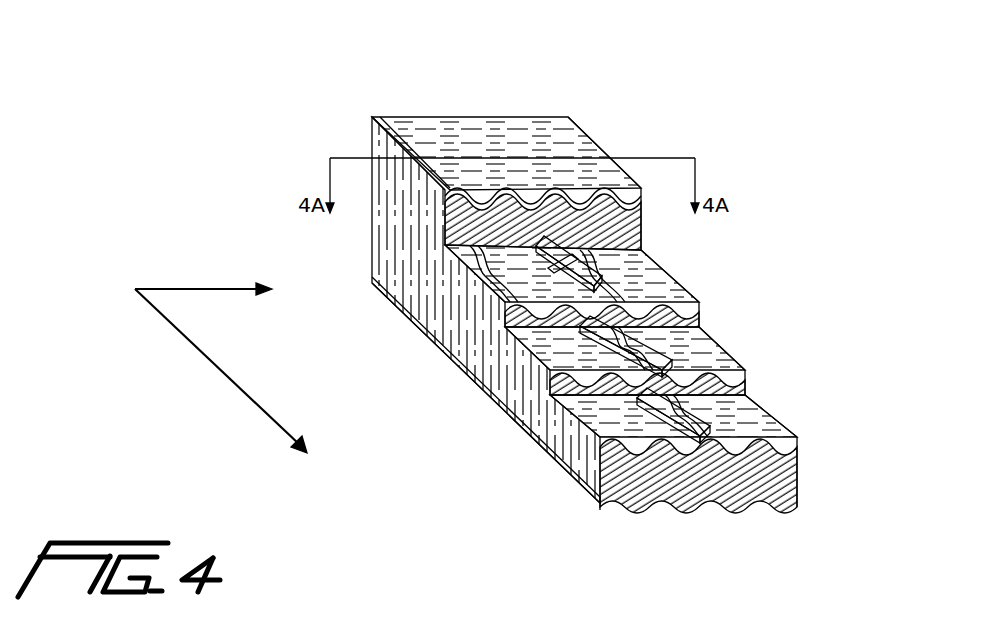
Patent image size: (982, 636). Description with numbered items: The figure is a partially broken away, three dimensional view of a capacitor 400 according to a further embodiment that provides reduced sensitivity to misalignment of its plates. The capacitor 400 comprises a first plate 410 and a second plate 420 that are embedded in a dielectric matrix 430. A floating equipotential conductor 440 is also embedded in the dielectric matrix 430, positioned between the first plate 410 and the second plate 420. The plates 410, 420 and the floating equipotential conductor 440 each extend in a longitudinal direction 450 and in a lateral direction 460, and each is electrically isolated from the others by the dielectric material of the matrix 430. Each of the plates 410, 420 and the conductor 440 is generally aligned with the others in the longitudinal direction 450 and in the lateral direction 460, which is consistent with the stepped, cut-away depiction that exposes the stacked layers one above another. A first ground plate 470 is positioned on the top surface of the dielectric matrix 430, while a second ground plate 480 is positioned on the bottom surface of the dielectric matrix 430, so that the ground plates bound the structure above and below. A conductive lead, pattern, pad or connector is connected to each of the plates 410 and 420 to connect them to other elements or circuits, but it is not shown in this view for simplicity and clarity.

The capacitor 400 is at (603, 54).
The first plate 410 is at (569, 252).
The second plate 420 is at (683, 404).
The dielectric matrix 430 is at (427, 269).
The floating equipotential conductor 440 is at (664, 340).
The longitudinal direction 450 is at (238, 383).
The lateral direction 460 is at (224, 290).
The first ground plate 470 is at (414, 156).
The second ground plate 480 is at (583, 492).